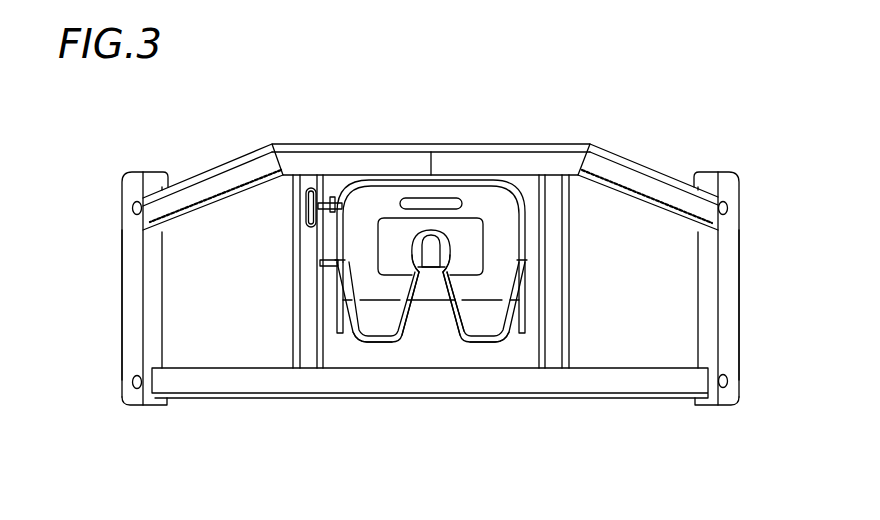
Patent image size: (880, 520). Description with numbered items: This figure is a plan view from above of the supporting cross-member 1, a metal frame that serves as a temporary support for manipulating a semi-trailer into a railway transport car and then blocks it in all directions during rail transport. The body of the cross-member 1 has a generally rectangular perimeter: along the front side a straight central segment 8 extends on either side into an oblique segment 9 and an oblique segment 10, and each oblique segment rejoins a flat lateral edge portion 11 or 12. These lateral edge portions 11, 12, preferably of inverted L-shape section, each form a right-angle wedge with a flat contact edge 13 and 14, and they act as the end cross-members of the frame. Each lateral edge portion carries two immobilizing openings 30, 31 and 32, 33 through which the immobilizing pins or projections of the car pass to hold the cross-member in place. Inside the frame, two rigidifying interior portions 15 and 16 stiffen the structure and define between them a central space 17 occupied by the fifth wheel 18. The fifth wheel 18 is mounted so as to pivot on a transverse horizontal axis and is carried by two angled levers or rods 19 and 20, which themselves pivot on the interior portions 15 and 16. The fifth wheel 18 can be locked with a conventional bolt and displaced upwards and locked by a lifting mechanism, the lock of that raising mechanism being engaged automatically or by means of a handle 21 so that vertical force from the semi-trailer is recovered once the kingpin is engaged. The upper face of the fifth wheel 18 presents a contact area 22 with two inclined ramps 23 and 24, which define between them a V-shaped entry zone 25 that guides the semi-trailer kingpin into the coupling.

The supporting cross-member 1 is at (312, 424).
The straight central segment 8 is at (450, 150).
The oblique segment 9 is at (208, 190).
The oblique segment 10 is at (650, 190).
The flat lateral edge portion 11 is at (103, 297).
The flat lateral edge portion 12 is at (752, 297).
The flat contact edge 13 is at (130, 330).
The flat contact edge 14 is at (728, 329).
The rigidifying interior portion 15 is at (303, 300).
The rigidifying interior portion 16 is at (562, 300).
The central space 17 is at (447, 345).
The fifth wheel 18 is at (508, 346).
The angled lever 19 is at (340, 305).
The angled lever 20 is at (524, 305).
The handle 21 is at (315, 188).
The contact area 22 is at (492, 200).
The inclined ramp 23 is at (378, 335).
The inclined ramp 24 is at (487, 330).
The V-shaped entry zone 25 is at (418, 318).
The immobilizing opening 30 is at (132, 206).
The immobilizing opening 31 is at (132, 381).
The immobilizing opening 32 is at (728, 206).
The immobilizing opening 33 is at (729, 381).